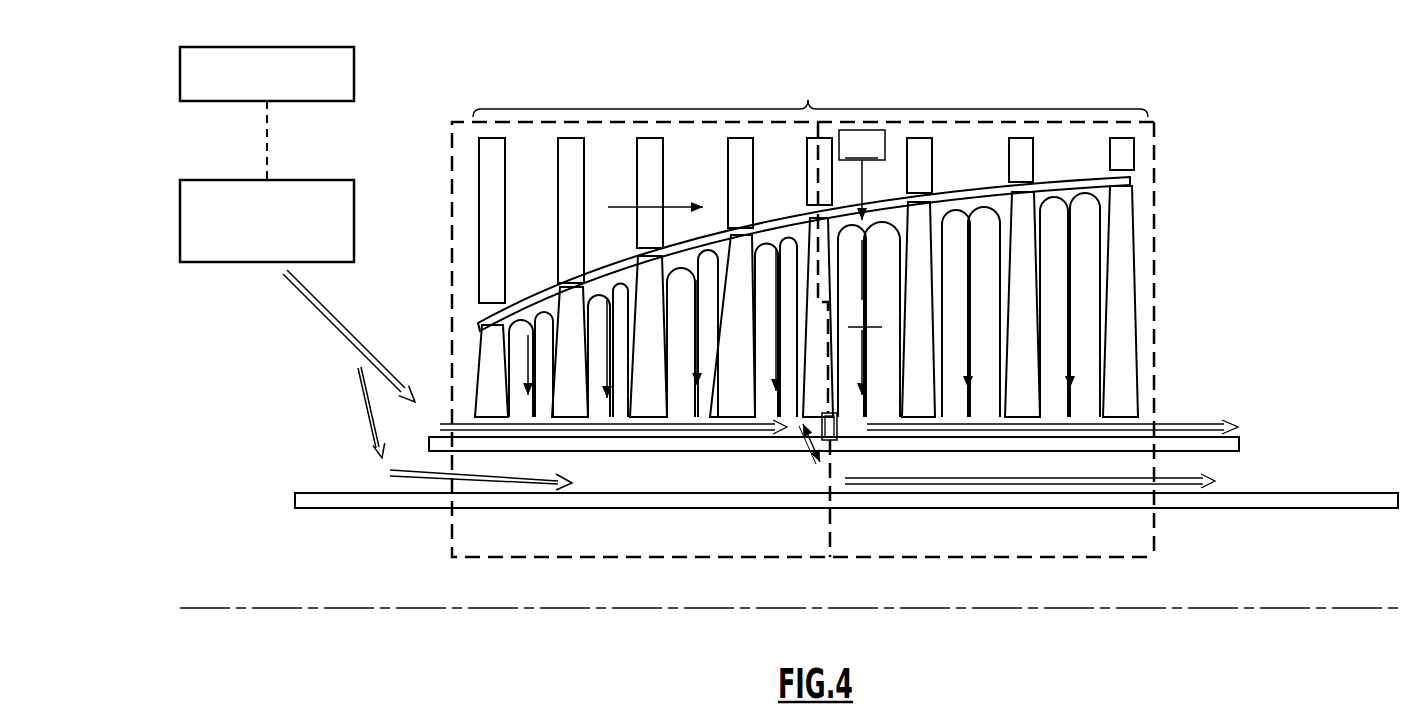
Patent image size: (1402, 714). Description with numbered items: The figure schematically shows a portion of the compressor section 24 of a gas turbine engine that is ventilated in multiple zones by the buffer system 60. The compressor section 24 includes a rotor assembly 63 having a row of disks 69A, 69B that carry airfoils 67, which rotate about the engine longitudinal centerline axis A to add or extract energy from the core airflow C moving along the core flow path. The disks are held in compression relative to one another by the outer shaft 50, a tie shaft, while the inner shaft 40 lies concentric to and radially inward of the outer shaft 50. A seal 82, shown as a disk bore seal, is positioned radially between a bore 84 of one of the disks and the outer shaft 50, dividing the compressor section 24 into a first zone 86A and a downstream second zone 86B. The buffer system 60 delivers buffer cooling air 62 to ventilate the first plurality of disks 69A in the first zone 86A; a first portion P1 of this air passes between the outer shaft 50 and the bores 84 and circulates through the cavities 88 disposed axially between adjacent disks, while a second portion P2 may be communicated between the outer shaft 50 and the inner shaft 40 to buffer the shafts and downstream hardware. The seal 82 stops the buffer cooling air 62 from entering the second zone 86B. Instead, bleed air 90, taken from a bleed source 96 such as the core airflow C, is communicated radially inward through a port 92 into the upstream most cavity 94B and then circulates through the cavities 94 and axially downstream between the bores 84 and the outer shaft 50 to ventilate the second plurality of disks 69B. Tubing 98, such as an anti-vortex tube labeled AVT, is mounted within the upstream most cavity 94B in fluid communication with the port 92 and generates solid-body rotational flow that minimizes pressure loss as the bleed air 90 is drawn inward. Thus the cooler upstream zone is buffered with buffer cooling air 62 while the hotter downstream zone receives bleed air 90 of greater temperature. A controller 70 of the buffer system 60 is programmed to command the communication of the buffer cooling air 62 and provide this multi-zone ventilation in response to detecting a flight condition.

The compressor section 24 is at (588, 100).
The inner shaft 40 is at (711, 508).
The outer shaft 50 is at (687, 443).
The buffer system 60 is at (180, 212).
The buffer cooling air 62 is at (325, 318).
The rotor assembly 63 is at (808, 100).
The airfoils 67 is at (550, 210).
The first plurality of disks 69A is at (575, 407).
The second plurality of disks 69B is at (1123, 320).
The controller 70 is at (180, 82).
The seal 82 is at (837, 430).
The bore 84 is at (470, 398).
The first zone 86A is at (452, 232).
The second zone 86B is at (1155, 186).
The cavities 88 is at (539, 312).
The bleed air 90 is at (860, 195).
The port 92 is at (868, 207).
The cavities 94 is at (997, 269).
The upstream most cavity 94B is at (900, 220).
The bleed source 96 is at (862, 175).
The tubing 98 is at (878, 270).
The engine longitudinal centerline axis A is at (975, 608).
The core airflow C is at (690, 210).
The first portion of the buffer cooling air P1 is at (603, 432).
The second portion of the buffer cooling air P2 is at (367, 413).
The active vane tip flow AVT is at (869, 315).